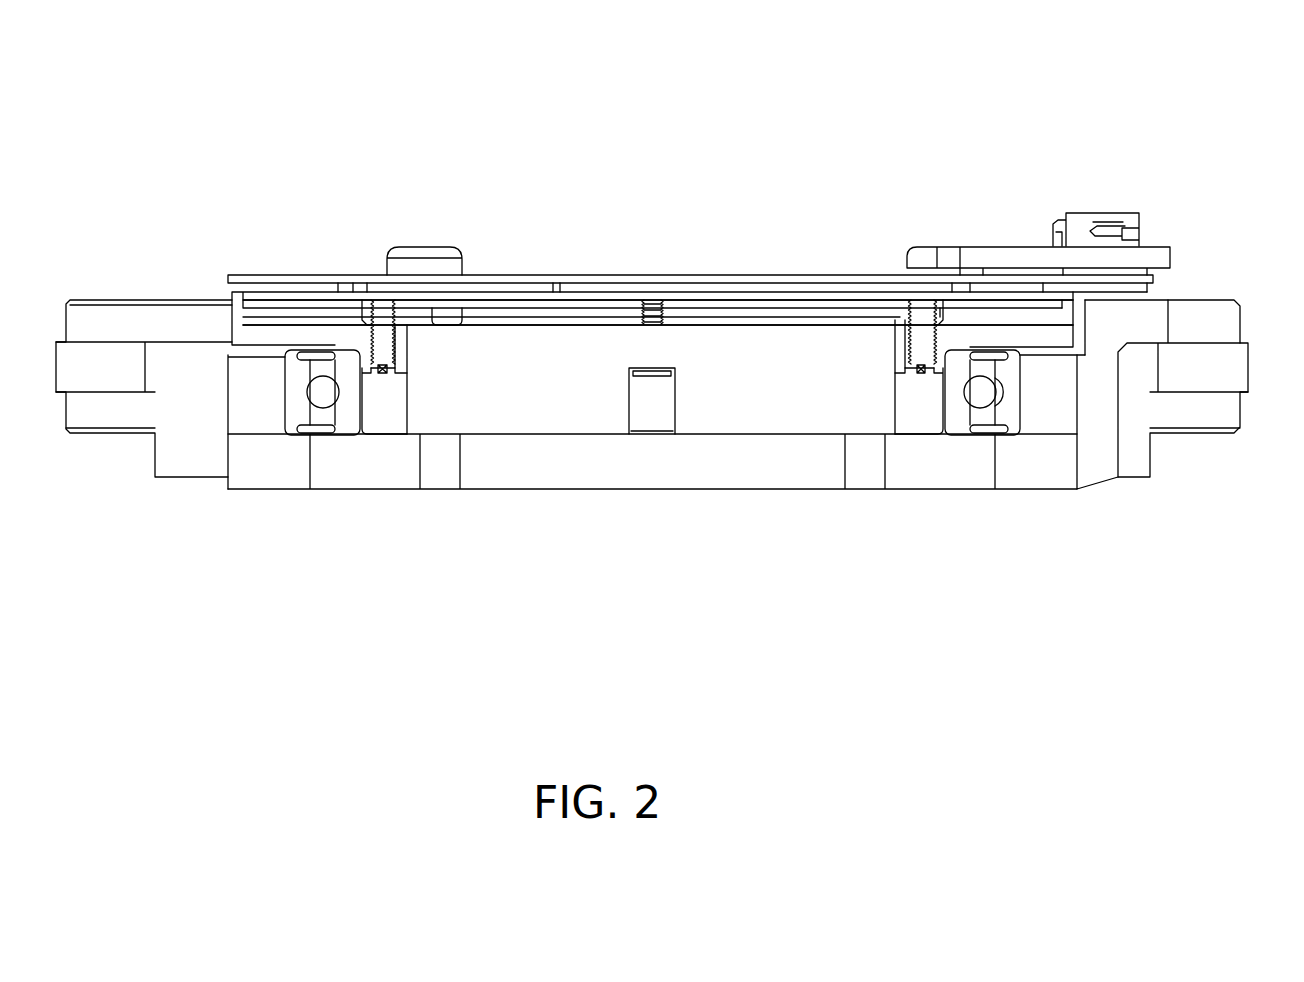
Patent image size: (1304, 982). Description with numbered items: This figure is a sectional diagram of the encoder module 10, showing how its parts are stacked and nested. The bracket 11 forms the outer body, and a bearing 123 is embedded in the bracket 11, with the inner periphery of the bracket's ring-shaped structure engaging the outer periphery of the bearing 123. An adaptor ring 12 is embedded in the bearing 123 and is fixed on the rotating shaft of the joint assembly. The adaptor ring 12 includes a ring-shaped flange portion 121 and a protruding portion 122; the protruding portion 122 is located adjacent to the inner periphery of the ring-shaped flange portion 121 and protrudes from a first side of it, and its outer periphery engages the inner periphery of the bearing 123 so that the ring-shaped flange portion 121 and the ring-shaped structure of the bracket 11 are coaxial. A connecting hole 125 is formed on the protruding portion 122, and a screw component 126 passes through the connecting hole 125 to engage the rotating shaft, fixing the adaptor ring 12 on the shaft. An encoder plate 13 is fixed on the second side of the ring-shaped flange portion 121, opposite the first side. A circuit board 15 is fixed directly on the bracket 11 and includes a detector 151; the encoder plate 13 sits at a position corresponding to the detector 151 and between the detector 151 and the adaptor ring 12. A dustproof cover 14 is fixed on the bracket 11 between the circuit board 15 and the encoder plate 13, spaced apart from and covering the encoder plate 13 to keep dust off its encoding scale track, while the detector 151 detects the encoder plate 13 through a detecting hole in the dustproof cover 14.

The encoder module 10 is at (102, 79).
The bracket 11 is at (800, 504).
The adaptor ring 12 is at (502, 449).
The ring-shaped flange portion 121 is at (316, 299).
The protruding portion 122 is at (387, 449).
The bearing 123 is at (1040, 411).
The connecting hole 125 is at (362, 363).
The screw component 126 is at (385, 296).
The encoder plate 13 is at (751, 285).
The dustproof cover 14 is at (598, 260).
The circuit board 15 is at (1169, 234).
The detector 151 is at (1007, 260).